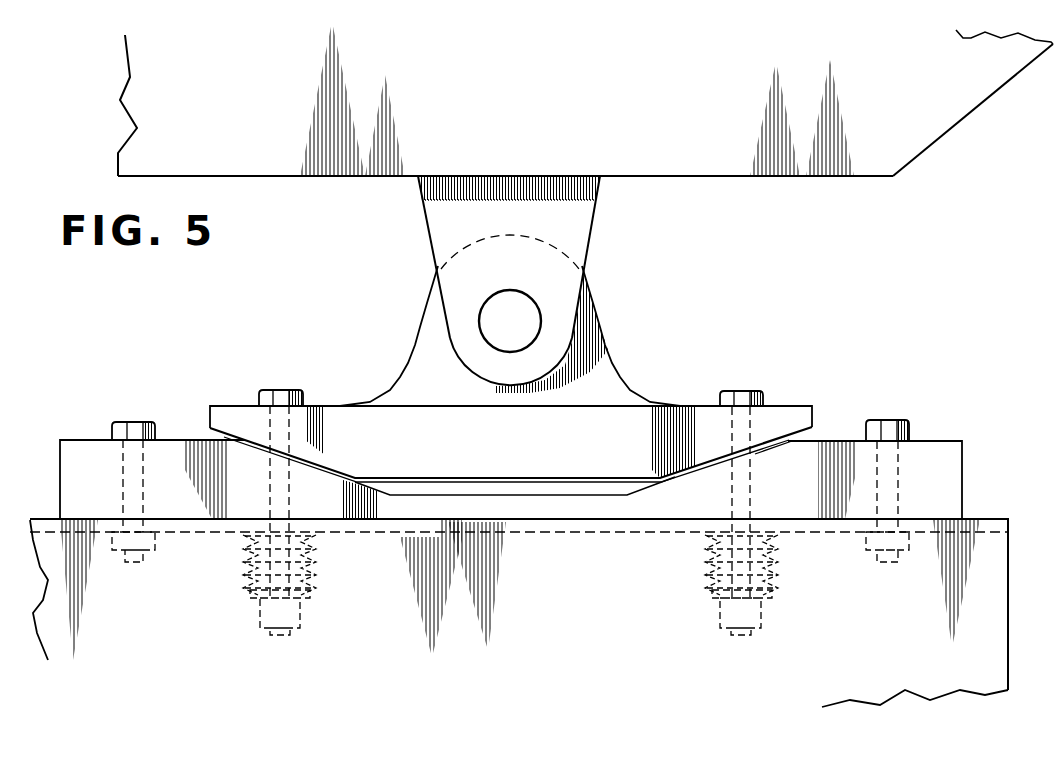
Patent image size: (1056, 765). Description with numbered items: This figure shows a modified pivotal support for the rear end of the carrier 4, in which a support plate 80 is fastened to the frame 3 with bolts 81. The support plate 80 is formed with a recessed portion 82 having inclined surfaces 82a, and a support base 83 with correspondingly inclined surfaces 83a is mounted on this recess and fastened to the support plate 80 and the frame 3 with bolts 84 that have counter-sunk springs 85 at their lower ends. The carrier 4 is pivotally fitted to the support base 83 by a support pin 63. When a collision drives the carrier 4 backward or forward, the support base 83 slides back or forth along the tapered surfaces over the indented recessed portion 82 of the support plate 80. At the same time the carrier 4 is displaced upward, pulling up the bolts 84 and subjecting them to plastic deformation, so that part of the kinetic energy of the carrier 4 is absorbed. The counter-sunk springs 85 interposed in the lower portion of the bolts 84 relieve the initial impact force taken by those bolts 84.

The frame 3 is at (992, 587).
The carrier 4 is at (945, 115).
The support pin 63 is at (526, 308).
The support plate 80 is at (953, 480).
The bolts 81 is at (905, 428).
The recessed portion 82 is at (541, 486).
The inclined surfaces 82a is at (760, 448).
The support base 83 is at (636, 399).
The inclined surfaces 83a is at (698, 466).
The bolts 84 is at (762, 395).
The counter-sunk springs 85 is at (783, 562).